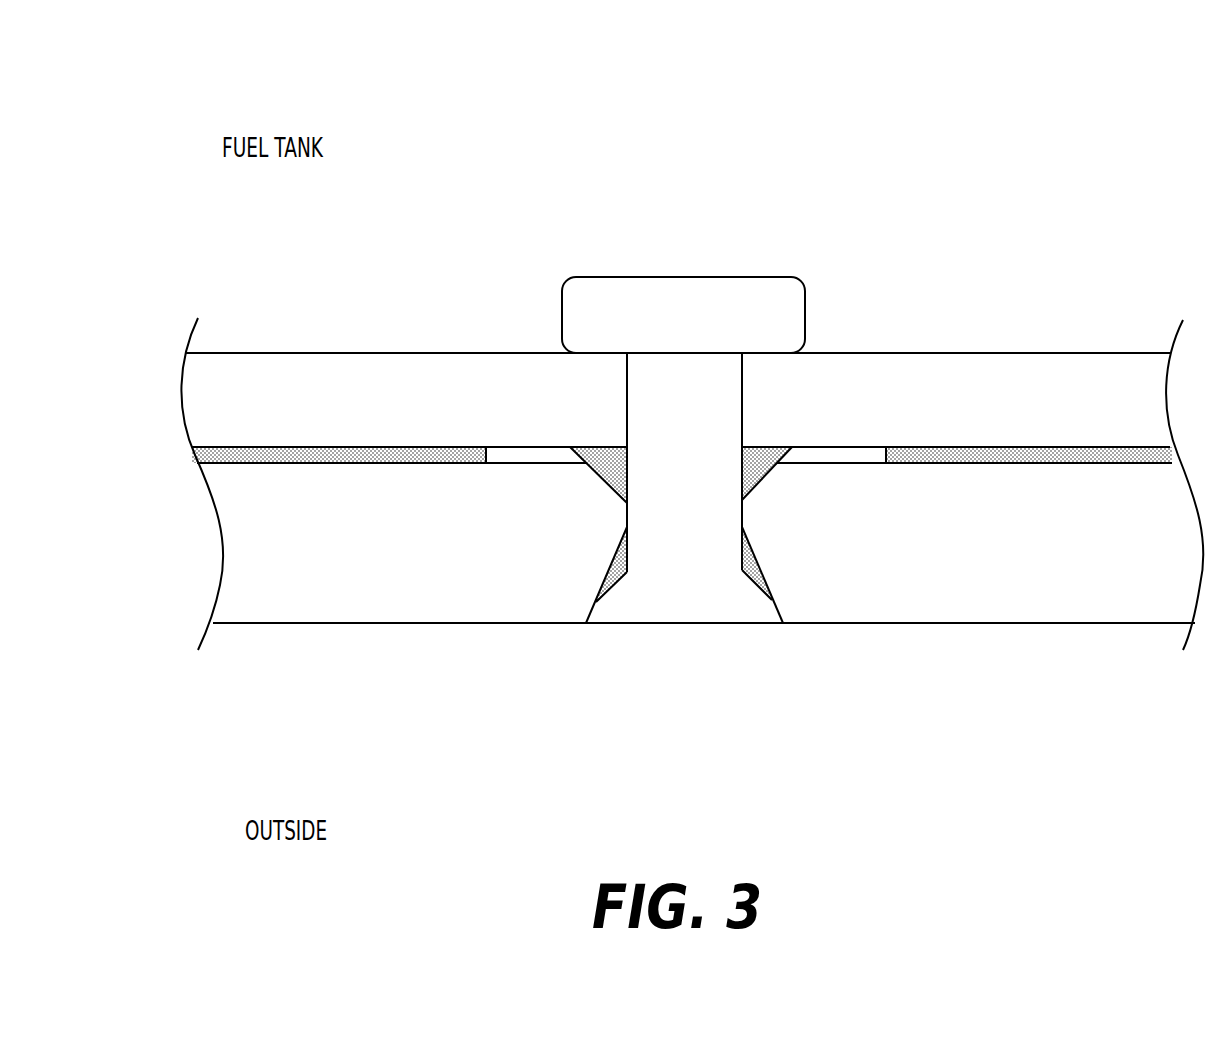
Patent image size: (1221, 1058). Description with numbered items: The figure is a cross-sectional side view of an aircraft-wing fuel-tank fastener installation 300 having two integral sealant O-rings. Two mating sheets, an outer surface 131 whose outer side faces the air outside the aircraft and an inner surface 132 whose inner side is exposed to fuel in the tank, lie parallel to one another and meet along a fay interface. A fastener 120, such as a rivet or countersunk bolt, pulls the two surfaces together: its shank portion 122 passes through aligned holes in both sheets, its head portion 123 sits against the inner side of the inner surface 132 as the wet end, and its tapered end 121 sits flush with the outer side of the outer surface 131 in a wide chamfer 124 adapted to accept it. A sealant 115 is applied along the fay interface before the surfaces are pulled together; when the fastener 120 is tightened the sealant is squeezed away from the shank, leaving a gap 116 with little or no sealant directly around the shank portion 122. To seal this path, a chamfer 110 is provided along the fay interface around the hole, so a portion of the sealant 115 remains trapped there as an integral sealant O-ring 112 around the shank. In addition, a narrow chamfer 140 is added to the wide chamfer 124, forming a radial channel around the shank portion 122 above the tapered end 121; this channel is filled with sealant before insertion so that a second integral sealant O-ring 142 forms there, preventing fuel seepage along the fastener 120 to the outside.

The aircraft-wing fuel-tank fastener installation 300 is at (211, 88).
The head portion 123 is at (700, 333).
The shank portion 122 is at (701, 421).
The inner surface 132 is at (271, 422).
The outer surface 131 is at (288, 600).
The sealant 115 is at (400, 455).
The gap 116 is at (513, 452).
The integral sealant O-ring 112 is at (613, 470).
The chamfer 110 is at (787, 493).
The integral sealant O-ring 142 is at (616, 560).
The narrow chamfer 140 is at (773, 560).
The wide chamfer 124 is at (788, 607).
The fastener 120 is at (685, 662).
The tapered end 121 is at (722, 608).